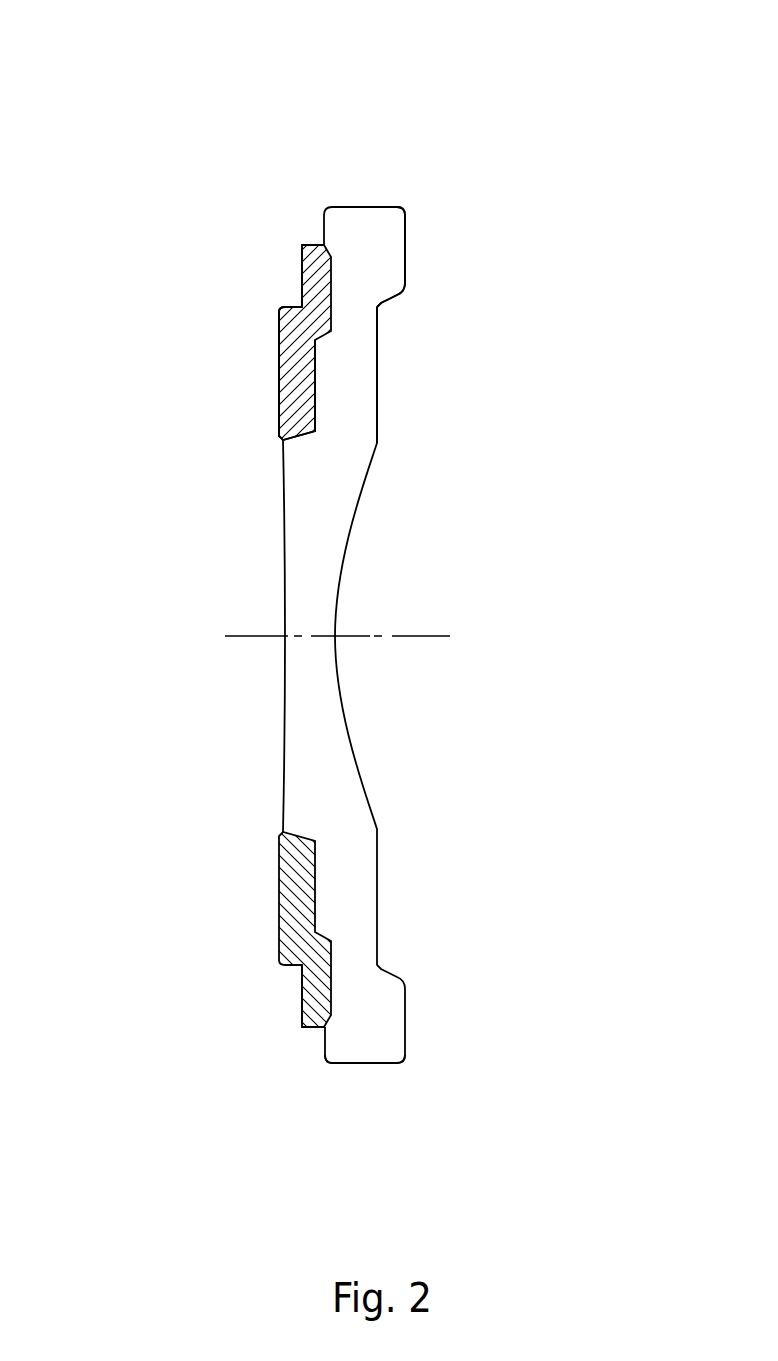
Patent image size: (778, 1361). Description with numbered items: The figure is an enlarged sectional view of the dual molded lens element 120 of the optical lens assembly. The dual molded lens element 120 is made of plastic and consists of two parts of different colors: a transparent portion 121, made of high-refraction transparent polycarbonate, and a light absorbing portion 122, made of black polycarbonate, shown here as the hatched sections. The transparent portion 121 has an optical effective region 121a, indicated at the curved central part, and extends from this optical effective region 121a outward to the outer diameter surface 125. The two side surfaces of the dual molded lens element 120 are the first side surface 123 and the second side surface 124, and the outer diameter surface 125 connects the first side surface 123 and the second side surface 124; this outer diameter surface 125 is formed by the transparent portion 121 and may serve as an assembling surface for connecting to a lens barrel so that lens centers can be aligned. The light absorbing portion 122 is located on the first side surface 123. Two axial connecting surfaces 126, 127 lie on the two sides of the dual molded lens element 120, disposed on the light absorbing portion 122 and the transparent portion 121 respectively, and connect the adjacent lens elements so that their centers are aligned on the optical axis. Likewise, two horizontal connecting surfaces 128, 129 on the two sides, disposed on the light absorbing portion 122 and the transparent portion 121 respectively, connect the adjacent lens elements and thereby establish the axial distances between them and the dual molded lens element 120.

The dual molded lens element 120 is at (152, 40).
The transparent portion 121 is at (468, 638).
The optical effective region 121a is at (305, 670).
The light absorbing portion 122 is at (295, 900).
The first side surface 123 is at (262, 414).
The second side surface 124 is at (392, 410).
The outer diameter surface 125 is at (363, 1065).
The axial connecting surface 126 is at (297, 304).
The axial connecting surface 127 is at (388, 298).
The horizontal connecting surface 128 is at (302, 272).
The horizontal connecting surface 129 is at (405, 253).